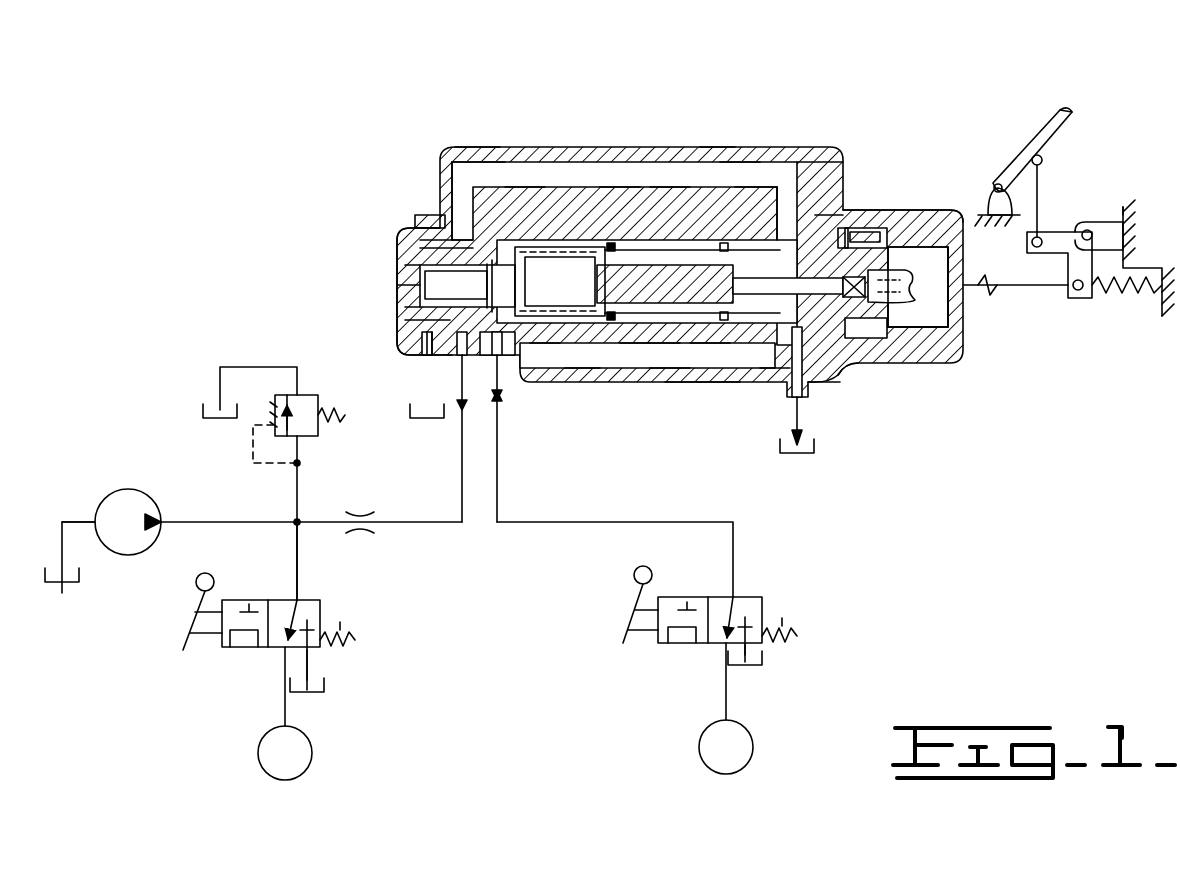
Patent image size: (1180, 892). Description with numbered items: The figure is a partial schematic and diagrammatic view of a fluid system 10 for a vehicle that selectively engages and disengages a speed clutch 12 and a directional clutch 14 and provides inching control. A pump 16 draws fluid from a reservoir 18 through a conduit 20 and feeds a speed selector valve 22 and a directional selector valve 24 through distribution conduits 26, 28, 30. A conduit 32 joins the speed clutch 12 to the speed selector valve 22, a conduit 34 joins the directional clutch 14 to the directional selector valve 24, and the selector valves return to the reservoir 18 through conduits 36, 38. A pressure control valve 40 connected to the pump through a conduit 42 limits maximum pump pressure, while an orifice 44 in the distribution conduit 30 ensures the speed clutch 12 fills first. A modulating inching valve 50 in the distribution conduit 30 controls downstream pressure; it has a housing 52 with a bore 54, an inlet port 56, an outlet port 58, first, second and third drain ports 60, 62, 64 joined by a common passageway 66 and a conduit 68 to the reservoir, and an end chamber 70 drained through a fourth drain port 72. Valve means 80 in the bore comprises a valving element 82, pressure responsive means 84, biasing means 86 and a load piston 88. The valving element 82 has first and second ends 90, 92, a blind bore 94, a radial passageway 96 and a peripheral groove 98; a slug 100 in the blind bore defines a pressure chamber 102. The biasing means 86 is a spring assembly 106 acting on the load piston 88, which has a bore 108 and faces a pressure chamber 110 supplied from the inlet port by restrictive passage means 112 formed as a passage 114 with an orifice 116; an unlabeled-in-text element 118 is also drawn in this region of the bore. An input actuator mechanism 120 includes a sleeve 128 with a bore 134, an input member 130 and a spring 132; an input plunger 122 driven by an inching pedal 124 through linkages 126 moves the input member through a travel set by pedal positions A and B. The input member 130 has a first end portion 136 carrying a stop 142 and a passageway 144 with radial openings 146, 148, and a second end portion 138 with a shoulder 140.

The fluid system 10 is at (140, 148).
The speed clutch 12 is at (314, 752).
The directional clutch 14 is at (754, 750).
The pump 16 is at (138, 534).
The reservoir 18 is at (800, 458).
The conduit 20 is at (80, 520).
The speed selector valve 22 is at (235, 648).
The directional selector valve 24 is at (665, 644).
The distribution conduit 26 is at (205, 520).
The distribution conduit 28 is at (302, 570).
The distribution conduit 30 is at (455, 490).
The conduit 32 is at (283, 705).
The conduit 34 is at (730, 700).
The conduit 36 is at (313, 660).
The conduit 38 is at (760, 650).
The pressure control valve 40 is at (312, 395).
The conduit 42 is at (300, 480).
The orifice 44 is at (362, 530).
The modulating inching valve 50 is at (392, 94).
The housing 52 is at (508, 147).
The bore 54 is at (768, 200).
The inlet port 56 is at (460, 370).
The outlet port 58 is at (512, 368).
The first drain port 60 is at (548, 362).
The second drain port 62 is at (868, 365).
The third drain port 64 is at (582, 370).
The common passageway 66 is at (722, 385).
The conduit 68 is at (808, 397).
The end chamber 70 is at (430, 242).
The fourth drain port 72 is at (425, 342).
The valve means 80 is at (483, 160).
The valving element 82 is at (415, 235).
The pressure responsive means 84 is at (345, 256).
The means for biasing the valving element 86 is at (575, 230).
The load piston 88 is at (618, 182).
The first end 90 is at (420, 322).
The second end 92 is at (525, 182).
The blind bore 94 is at (410, 278).
The radial passageway 96 is at (468, 205).
The peripheral groove 98 is at (445, 230).
The slug 100 is at (478, 297).
The pressure chamber 102 is at (415, 302).
The spring assembly 106 is at (621, 281).
The bore 108 is at (668, 375).
The pressure chamber 110 is at (717, 150).
The restrictive passage means 112 is at (728, 168).
The passage 114 is at (668, 180).
The orifice 116 is at (745, 192).
The spool stem 118 is at (799, 287).
The input actuator mechanism 120 is at (920, 302).
The input plunger 122 is at (930, 262).
The inching pedal 124 is at (1033, 125).
The linkages 126 is at (1070, 215).
The sleeve 128 is at (835, 212).
The input member 130 is at (855, 228).
The spring 132 is at (910, 222).
The bore 134 is at (777, 382).
The first end portion 136 is at (645, 370).
The second end portion 138 is at (950, 330).
The shoulder 140 is at (852, 372).
The stop 142 is at (682, 378).
The passageway 144 is at (700, 365).
The first radial opening 146 is at (842, 228).
The second radial opening 148 is at (812, 170).
The pedal position A is at (1070, 107).
The fully actuated position B is at (1103, 143).